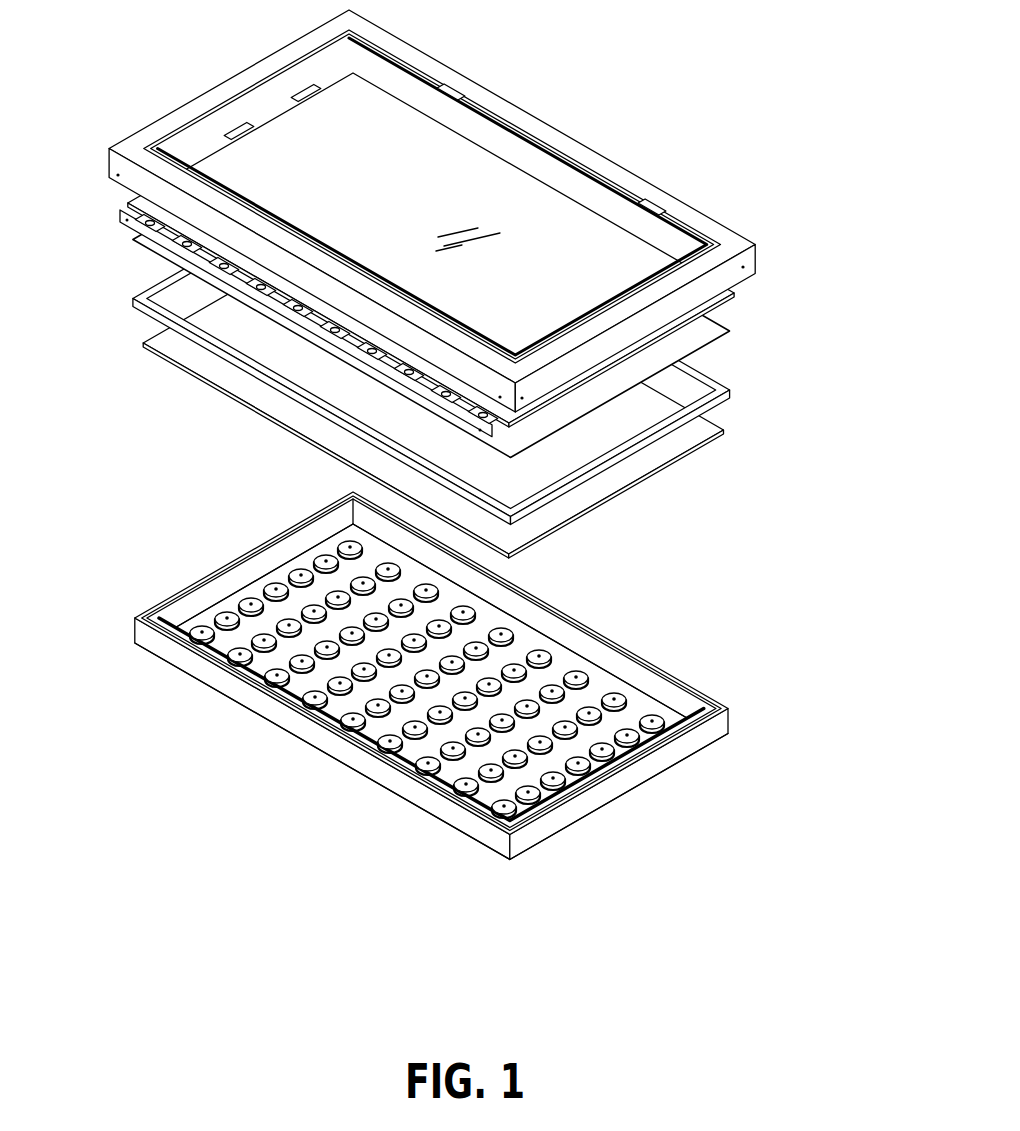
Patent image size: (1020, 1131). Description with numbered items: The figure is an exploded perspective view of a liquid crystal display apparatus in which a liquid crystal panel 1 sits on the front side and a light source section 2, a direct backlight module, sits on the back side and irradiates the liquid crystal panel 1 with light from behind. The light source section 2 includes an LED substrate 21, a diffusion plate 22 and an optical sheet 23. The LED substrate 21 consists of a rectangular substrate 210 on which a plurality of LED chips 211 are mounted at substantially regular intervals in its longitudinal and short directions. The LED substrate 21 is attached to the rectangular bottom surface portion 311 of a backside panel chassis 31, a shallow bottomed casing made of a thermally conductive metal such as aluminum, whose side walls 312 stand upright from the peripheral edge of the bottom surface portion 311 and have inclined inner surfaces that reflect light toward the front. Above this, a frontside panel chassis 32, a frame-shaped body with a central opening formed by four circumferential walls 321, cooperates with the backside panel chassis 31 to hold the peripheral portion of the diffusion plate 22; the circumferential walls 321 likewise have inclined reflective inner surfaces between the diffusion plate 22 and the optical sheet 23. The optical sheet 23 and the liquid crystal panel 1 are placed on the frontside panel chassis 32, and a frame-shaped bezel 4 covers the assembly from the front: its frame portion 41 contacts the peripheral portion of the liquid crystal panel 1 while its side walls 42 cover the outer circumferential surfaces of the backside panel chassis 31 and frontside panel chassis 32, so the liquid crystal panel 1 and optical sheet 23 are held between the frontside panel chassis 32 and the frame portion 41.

The liquid crystal panel 1 is at (466, 173).
The light source section 2 is at (456, 545).
The bezel 4 is at (431, 207).
The frame portion 41 is at (716, 227).
The side walls 42 is at (218, 84).
The LED substrate 21 is at (432, 710).
The substrate 210 is at (370, 733).
The LED chips 211 is at (427, 786).
The diffusion plate 22 is at (657, 475).
The optical sheet 23 is at (711, 344).
The backside panel chassis 31 is at (445, 676).
The bottom surface portion 311 is at (243, 713).
The side walls 312 is at (211, 571).
The frontside panel chassis 32 is at (456, 365).
The circumferential walls 321 is at (167, 279).